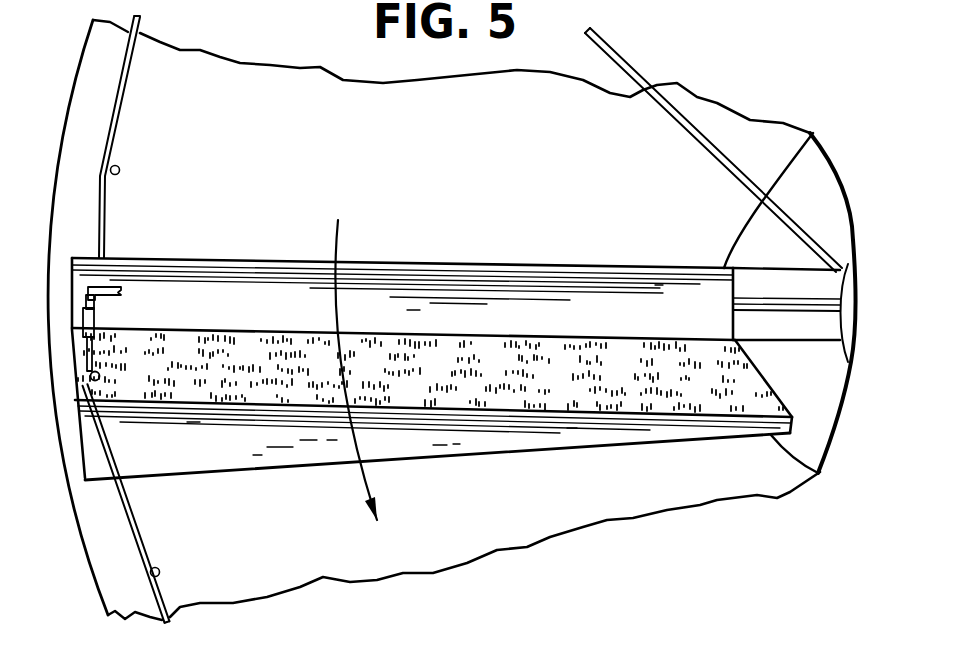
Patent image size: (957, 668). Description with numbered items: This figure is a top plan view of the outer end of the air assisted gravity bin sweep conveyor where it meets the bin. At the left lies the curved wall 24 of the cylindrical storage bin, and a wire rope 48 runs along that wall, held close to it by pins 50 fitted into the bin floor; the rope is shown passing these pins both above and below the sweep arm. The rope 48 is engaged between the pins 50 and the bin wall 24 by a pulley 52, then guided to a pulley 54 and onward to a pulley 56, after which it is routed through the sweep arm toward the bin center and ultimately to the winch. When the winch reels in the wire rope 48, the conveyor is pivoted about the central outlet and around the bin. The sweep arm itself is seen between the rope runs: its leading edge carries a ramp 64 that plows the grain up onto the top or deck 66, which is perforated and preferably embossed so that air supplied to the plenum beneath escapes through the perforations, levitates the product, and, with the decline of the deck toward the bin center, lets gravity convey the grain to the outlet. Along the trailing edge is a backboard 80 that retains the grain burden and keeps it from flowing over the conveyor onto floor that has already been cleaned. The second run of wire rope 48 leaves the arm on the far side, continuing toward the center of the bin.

The curved wall 24 is at (82, 540).
The wire rope 48 is at (133, 522).
The pins 50 is at (120, 166).
The pulley 52 is at (97, 383).
The pulley 54 is at (97, 313).
The pulley 56 is at (113, 288).
The ramp 64 is at (290, 453).
The deck 66 is at (213, 368).
The backboard 80 is at (378, 273).